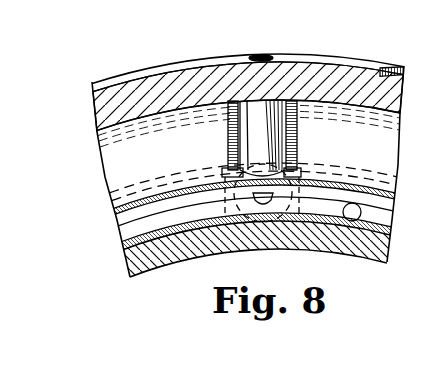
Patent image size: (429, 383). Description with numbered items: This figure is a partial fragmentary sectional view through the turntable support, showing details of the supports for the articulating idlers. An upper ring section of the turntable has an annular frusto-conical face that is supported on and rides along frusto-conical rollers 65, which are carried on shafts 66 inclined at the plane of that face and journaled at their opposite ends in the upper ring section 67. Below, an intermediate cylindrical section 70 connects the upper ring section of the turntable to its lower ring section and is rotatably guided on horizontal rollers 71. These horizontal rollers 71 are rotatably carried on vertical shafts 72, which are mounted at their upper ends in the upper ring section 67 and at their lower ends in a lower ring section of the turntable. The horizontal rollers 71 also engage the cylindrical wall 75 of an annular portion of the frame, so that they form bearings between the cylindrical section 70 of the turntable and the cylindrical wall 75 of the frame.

The frusto-conical rollers 65 is at (282, 131).
The shafts 66 is at (262, 57).
The upper ring section 67 is at (364, 64).
The intermediate cylindrical section 70 is at (133, 262).
The horizontal rollers 71 is at (296, 202).
The vertical shafts 72 is at (267, 195).
The cylindrical wall 75 is at (114, 210).